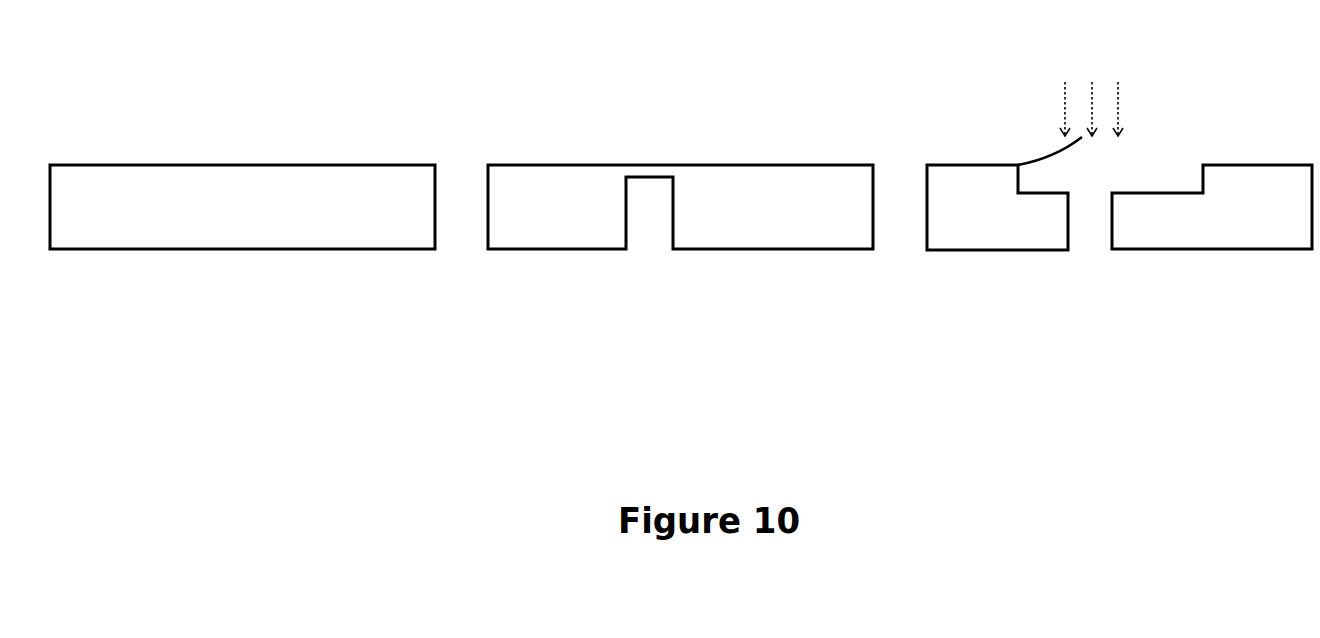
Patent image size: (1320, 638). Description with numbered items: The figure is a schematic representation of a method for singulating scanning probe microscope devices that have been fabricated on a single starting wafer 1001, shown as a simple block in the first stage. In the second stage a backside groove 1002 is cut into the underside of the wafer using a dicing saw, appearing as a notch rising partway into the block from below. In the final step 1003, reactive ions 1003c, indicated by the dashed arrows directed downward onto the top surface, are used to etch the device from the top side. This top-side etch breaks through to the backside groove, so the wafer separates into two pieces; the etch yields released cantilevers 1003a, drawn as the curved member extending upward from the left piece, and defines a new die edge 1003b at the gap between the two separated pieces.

The single starting wafer 1001 is at (242, 249).
The backside groove 1002 is at (649, 226).
The final step 1003 is at (1082, 181).
The released cantilevers 1003a is at (1026, 146).
The new die edge 1003b is at (1099, 188).
The reactive ions 1003c is at (1102, 83).